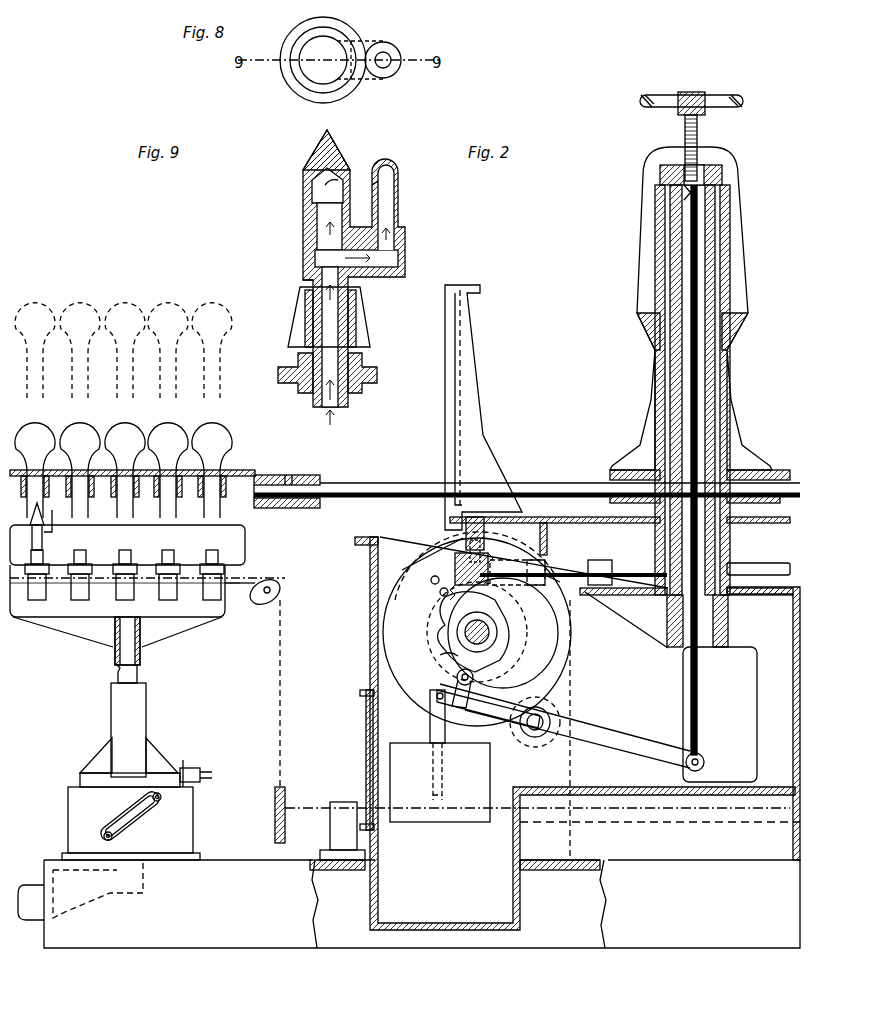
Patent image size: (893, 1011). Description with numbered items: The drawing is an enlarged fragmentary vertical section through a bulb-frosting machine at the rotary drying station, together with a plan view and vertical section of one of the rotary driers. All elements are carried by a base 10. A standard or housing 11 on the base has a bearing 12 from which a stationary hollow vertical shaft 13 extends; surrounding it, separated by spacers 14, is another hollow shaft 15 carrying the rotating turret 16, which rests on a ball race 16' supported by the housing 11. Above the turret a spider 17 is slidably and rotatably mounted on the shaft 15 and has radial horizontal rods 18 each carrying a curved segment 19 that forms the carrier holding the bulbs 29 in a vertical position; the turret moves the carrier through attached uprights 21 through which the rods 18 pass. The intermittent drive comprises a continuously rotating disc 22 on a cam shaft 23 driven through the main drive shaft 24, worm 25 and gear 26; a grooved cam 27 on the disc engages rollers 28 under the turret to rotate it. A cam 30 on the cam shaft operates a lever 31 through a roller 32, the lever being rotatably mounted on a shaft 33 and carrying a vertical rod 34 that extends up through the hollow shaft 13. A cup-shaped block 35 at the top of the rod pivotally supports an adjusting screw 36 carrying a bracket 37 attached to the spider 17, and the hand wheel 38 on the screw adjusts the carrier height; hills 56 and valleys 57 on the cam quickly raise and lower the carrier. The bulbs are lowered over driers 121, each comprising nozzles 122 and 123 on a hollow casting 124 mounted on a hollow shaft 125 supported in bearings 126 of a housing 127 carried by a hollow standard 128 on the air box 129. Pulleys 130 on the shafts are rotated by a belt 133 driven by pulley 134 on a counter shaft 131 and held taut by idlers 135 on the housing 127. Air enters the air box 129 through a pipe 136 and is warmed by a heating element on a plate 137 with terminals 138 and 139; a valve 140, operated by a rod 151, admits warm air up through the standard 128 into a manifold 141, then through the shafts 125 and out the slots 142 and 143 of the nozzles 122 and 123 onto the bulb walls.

In FIG. 2, the base 10 is at (646, 790).
In FIG. 2, the standard or housing 11 is at (757, 688).
In FIG. 2, the bearing 12 is at (667, 650).
In FIG. 2, the stationary hollow vertical shaft 13 is at (736, 382).
In FIG. 2, the spacers 14 is at (730, 546).
In FIG. 2, the hollow shaft 15 is at (716, 422).
In FIG. 2, the rotating turret 16 is at (573, 539).
In FIG. 2, the ball race 16' is at (573, 588).
In FIG. 2, the spider 17 is at (750, 456).
In FIG. 2, the horizontal rods 18 is at (788, 478).
In FIG. 2, the curved segment 19 is at (250, 468).
In FIG. 2, the uprights 21 is at (483, 436).
In FIG. 2, the continuously rotating disc 22 is at (380, 700).
In FIG. 2, the cam shaft 23 is at (483, 642).
In FIG. 2, the main drive shaft 24 is at (767, 578).
In FIG. 2, the worm 25 is at (484, 596).
In FIG. 2, the gear 26 is at (428, 617).
In FIG. 2, the grooved cam 27 is at (425, 556).
In FIG. 2, the rollers 28 is at (483, 540).
In FIG. 2, the bulbs 29 is at (222, 433).
In FIG. 2, the cam 30 is at (560, 636).
In FIG. 2, the lever 31 is at (613, 730).
In FIG. 2, the roller 32 is at (450, 678).
In FIG. 2, the shaft 33 is at (535, 740).
In FIG. 2, the vertical rod 34 is at (700, 236).
In FIG. 2, the block 35 is at (718, 183).
In FIG. 2, the adjusting screw 36 is at (685, 128).
In FIG. 2, the bracket 37 is at (638, 292).
In FIG. 2, the hand wheel 38 is at (660, 96).
In FIG. 2, the hills 56 is at (442, 618).
In FIG. 2, the valleys 57 is at (440, 650).
In FIG. 9, the driers 121 is at (303, 248).
In FIG. 8, the nozzle 122 is at (314, 78).
In FIG. 9, the nozzle 122 is at (333, 160).
In FIG. 8, the nozzle 123 is at (388, 53).
In FIG. 9, the nozzle 123 is at (398, 187).
In FIG. 9, the hollow casting 124 is at (303, 276).
In FIG. 9, the hollow shaft 125 is at (350, 330).
In FIG. 2, the hollow shaft 125 is at (88, 557).
In FIG. 9, the bearings 126 is at (360, 370).
In FIG. 2, the bearings 126 is at (48, 570).
In FIG. 2, the housing 127 is at (245, 550).
In FIG. 2, the hollow standard 128 is at (140, 680).
In FIG. 2, the air box 129 is at (68, 795).
In FIG. 2, the pulleys 130 is at (140, 575).
In FIG. 2, the counter shaft 131 is at (308, 800).
In FIG. 2, the belt 133 is at (284, 727).
In FIG. 2, the pulley 134 is at (275, 810).
In FIG. 2, the idlers 135 is at (276, 583).
In FIG. 2, the pipe 136 is at (32, 880).
In FIG. 2, the plate 137 is at (140, 822).
In FIG. 2, the terminal 138 is at (104, 834).
In FIG. 2, the terminal 139 is at (160, 803).
In FIG. 2, the valve 140 is at (174, 768).
In FIG. 2, the manifold 141 is at (52, 605).
In FIG. 9, the slot 142 is at (341, 180).
In FIG. 9, the slot 143 is at (375, 172).
In FIG. 2, the rod 151 is at (206, 775).